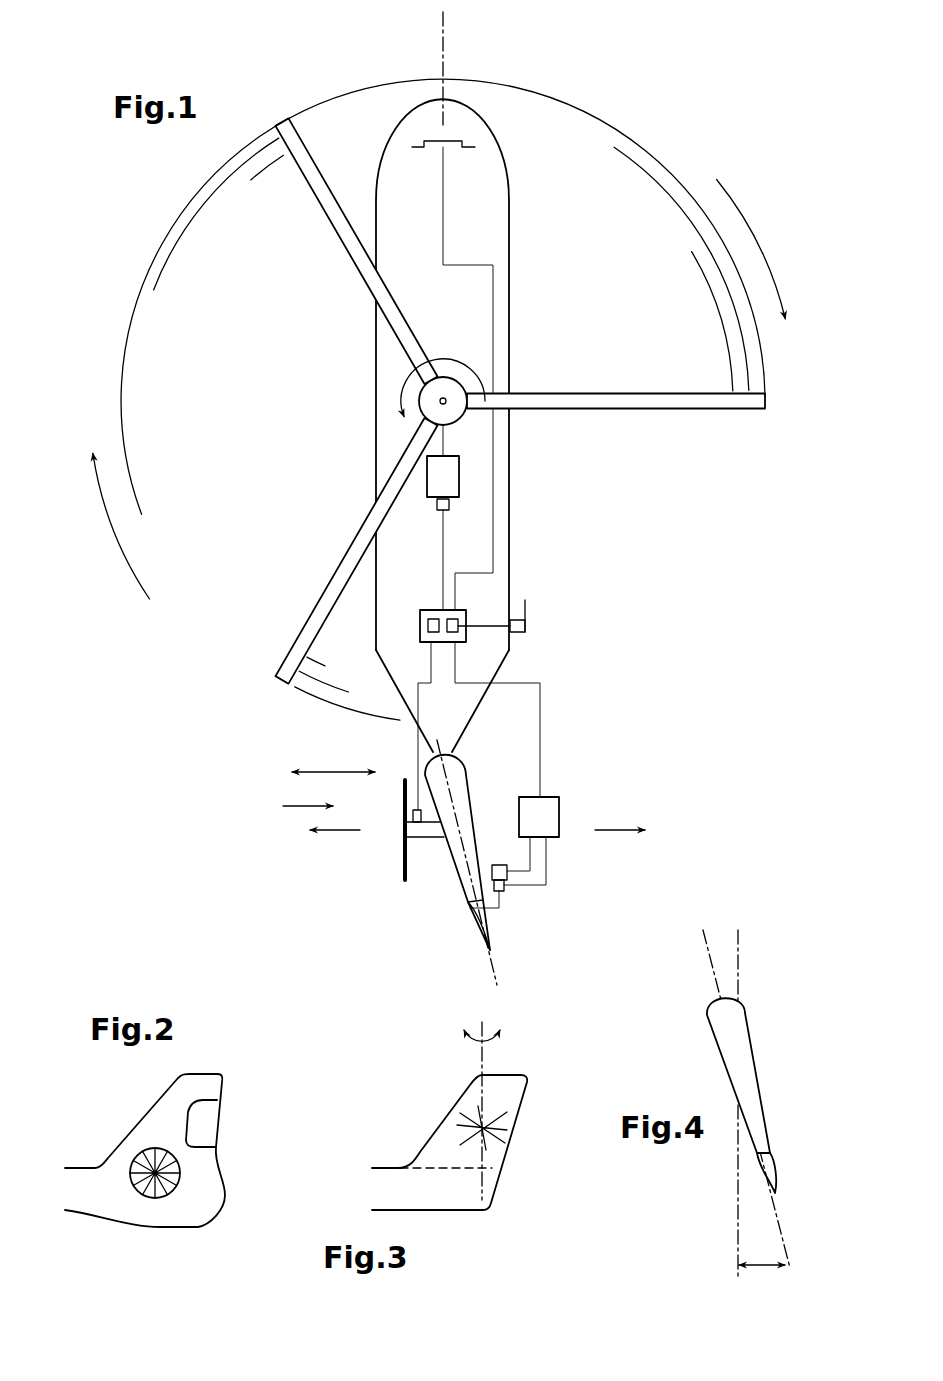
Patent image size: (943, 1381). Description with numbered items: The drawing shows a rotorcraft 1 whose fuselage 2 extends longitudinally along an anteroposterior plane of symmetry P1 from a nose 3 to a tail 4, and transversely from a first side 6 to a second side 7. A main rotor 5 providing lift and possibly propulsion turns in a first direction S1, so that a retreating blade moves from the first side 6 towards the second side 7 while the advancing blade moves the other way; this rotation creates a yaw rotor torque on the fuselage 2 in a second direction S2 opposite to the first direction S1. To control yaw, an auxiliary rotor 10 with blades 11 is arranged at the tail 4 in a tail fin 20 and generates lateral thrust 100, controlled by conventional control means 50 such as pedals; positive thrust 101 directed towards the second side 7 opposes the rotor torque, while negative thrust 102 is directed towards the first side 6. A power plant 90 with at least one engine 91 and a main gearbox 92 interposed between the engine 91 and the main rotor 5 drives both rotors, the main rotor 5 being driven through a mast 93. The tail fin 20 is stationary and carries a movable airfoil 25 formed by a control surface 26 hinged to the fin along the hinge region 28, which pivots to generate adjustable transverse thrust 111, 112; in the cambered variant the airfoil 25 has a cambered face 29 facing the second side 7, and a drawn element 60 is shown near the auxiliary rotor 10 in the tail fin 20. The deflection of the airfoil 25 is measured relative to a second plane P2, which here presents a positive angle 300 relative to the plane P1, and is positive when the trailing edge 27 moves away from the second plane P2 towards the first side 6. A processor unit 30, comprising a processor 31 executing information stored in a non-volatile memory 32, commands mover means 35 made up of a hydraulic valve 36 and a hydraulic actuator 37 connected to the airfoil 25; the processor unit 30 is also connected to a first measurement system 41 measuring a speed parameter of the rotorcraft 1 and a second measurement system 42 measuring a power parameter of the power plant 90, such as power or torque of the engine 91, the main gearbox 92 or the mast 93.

In FIG. 1, the rotorcraft 1 is at (690, 90).
In FIG. 1, the fuselage 2 is at (509, 222).
In FIG. 1, the nose 3 is at (443, 100).
In FIG. 1, the tail 4 is at (283, 806).
In FIG. 1, the main rotor 5 is at (612, 393).
In FIG. 1, the first side 6 is at (640, 480).
In FIG. 1, the second side 7 is at (262, 480).
In FIG. 1, the auxiliary rotor 10 is at (382, 870).
In FIG. 2, the auxiliary rotor 10 is at (150, 1196).
In FIG. 3, the auxiliary rotor 10 is at (463, 1143).
In FIG. 1, the blades 11 is at (404, 790).
In FIG. 1, the tail fin 20 is at (498, 866).
In FIG. 2, the tail fin 20 is at (135, 1118).
In FIG. 3, the tail fin 20 is at (445, 1116).
In FIG. 4, the tail fin 20 is at (760, 1090).
In FIG. 1, the movable airfoil 25 is at (538, 926).
In FIG. 2, the movable airfoil 25 is at (254, 1114).
In FIG. 3, the movable airfoil 25 is at (480, 1076).
In FIG. 4, the movable airfoil 25 is at (708, 1200).
In FIG. 1, the control surface 26 is at (488, 920).
In FIG. 2, the control surface 26 is at (210, 1122).
In FIG. 4, the control surface 26 is at (767, 1182).
In FIG. 1, the trailing edge 27 is at (488, 952).
In FIG. 1, the hinge axis 28 is at (469, 905).
In FIG. 4, the cambered face 29 is at (755, 1172).
In FIG. 1, the processor unit 30 is at (420, 620).
In FIG. 1, the processor 31 is at (426, 628).
In FIG. 1, the non-volatile memory 32 is at (462, 632).
In FIG. 1, the mover means 35 is at (587, 862).
In FIG. 1, the hydraulic valve 36 is at (560, 808).
In FIG. 1, the hydraulic actuator 37 is at (499, 864).
In FIG. 1, the first measurement system 41 is at (527, 626).
In FIG. 1, the second measurement system 42 is at (450, 505).
In FIG. 1, the control means 50 is at (468, 141).
In FIG. 1, the tail rotor shaft 60 is at (436, 824).
In FIG. 1, the power plant 90 is at (412, 508).
In FIG. 1, the engine 91 is at (460, 475).
In FIG. 1, the main gearbox 92 is at (425, 362).
In FIG. 1, the mast 93 is at (446, 398).
In FIG. 1, the lateral thrust 100 is at (333, 762).
In FIG. 1, the positive thrust 101 is at (310, 782).
In FIG. 1, the negative thrust 102 is at (358, 776).
In FIG. 1, the transverse thrust 111 is at (337, 830).
In FIG. 1, the transverse thrust 112 is at (633, 830).
In FIG. 4, the positive angle 300 is at (764, 1283).
In FIG. 1, the anteroposterior plane of symmetry P1 is at (446, 45).
In FIG. 4, the anteroposterior plane of symmetry P1 is at (740, 952).
In FIG. 1, the second plane P2 is at (499, 964).
In FIG. 4, the second plane P2 is at (708, 950).
In FIG. 1, the first direction S1 is at (759, 249).
In FIG. 1, the second direction S2 is at (400, 410).